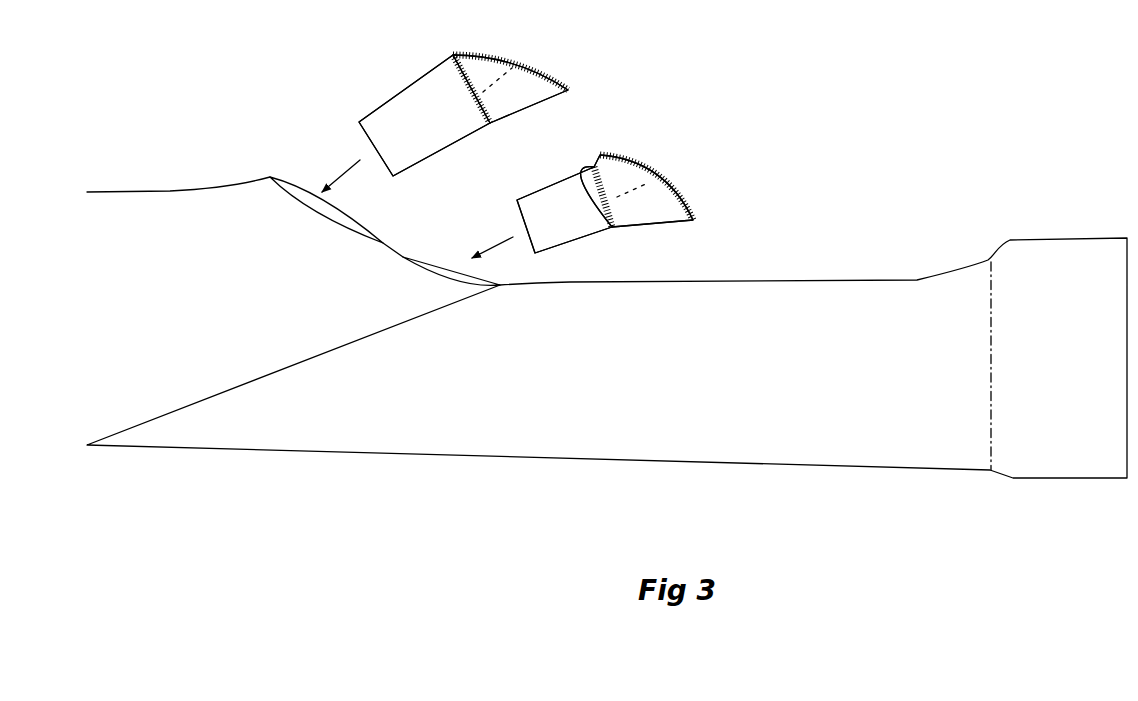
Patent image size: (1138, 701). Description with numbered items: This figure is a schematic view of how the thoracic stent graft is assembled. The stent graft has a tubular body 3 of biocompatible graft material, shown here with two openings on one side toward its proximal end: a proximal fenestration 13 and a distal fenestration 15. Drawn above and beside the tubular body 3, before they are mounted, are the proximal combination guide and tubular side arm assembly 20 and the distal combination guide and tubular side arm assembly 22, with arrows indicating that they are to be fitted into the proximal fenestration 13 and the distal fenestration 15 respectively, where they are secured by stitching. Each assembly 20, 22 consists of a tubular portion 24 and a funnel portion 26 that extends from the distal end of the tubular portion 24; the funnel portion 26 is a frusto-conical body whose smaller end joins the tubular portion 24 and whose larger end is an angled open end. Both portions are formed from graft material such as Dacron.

The tubular body 3 is at (560, 422).
The proximal fenestration 13 is at (325, 217).
The distal fenestration 15 is at (445, 275).
The proximal combination guide and tubular side arm assembly 20 is at (370, 68).
The distal combination guide and tubular side arm assembly 22 is at (685, 177).
The tubular portion 24 is at (430, 122).
The funnel portion 26 is at (528, 102).